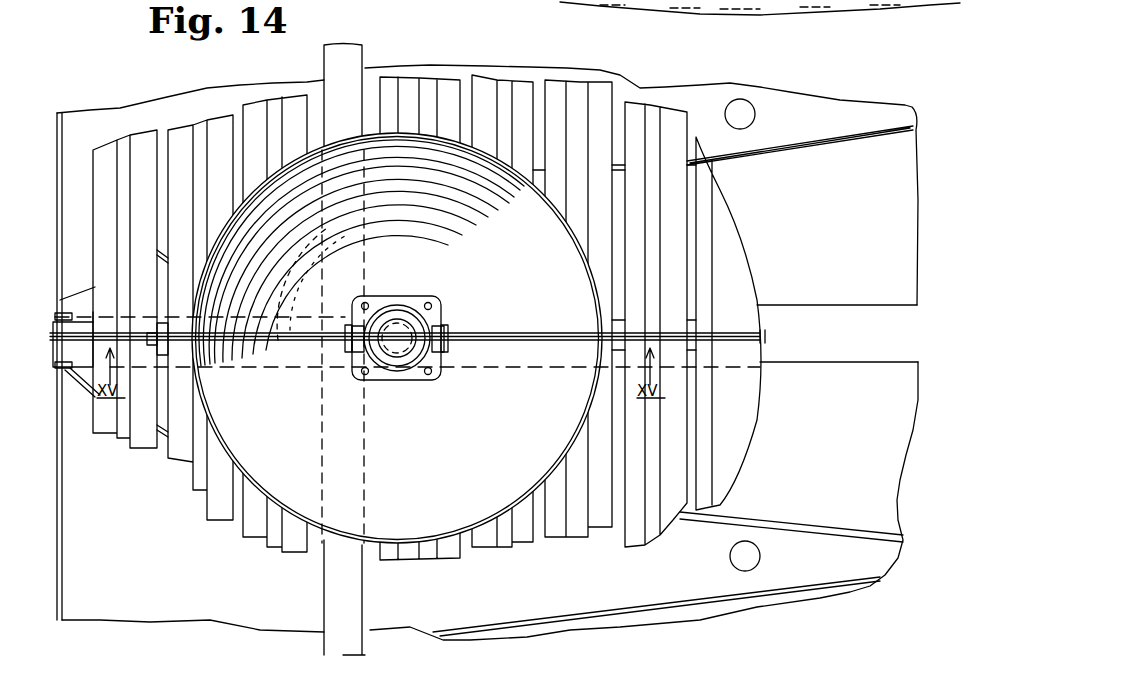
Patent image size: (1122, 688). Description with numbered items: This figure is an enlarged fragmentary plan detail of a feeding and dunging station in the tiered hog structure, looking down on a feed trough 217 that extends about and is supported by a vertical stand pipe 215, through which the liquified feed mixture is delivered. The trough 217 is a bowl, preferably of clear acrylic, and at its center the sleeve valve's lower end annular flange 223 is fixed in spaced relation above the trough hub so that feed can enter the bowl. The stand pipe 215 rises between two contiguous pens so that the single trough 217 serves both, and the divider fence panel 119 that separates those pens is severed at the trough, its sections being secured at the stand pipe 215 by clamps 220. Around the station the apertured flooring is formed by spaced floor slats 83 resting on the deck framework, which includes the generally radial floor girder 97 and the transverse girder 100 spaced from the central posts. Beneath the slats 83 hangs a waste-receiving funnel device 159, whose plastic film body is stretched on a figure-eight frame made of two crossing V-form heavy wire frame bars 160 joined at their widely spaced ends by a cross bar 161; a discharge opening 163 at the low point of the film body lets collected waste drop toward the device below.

The floor slats 83 is at (178, 128).
The floor girder 97 is at (95, 313).
The transverse girder 100 is at (362, 63).
The divider fence panel 119 is at (762, 330).
The waste-receiving funnel device 159 is at (870, 362).
The frame bar 160 is at (845, 146).
The cross bar 161 is at (59, 112).
The discharge opening 163 is at (752, 107).
The stand pipe 215 is at (397, 318).
The feed trough 217 is at (520, 170).
The clamp 220 is at (440, 324).
The annular flange 223 is at (426, 298).